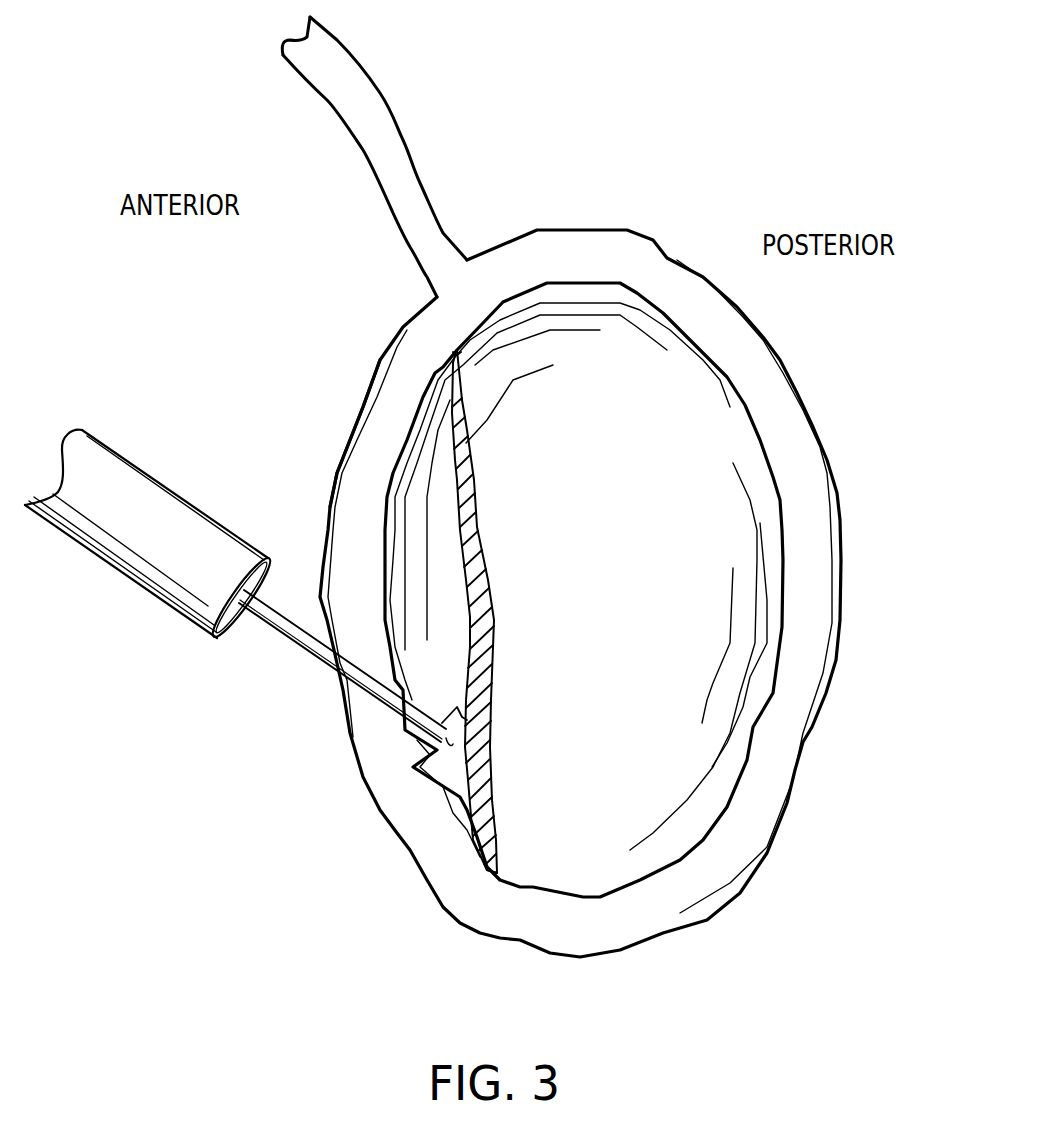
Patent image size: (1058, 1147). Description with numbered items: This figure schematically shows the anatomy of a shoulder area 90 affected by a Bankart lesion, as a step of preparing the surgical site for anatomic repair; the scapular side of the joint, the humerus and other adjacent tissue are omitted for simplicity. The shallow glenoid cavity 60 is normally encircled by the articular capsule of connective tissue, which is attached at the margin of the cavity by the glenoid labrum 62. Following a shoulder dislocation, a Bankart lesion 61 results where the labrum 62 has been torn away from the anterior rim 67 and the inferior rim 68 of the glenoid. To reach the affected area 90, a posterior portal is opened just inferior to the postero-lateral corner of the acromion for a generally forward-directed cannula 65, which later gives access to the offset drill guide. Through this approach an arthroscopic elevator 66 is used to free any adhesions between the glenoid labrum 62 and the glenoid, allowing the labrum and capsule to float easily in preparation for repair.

The glenoid cavity 60 is at (733, 521).
The Bankart lesion 61 is at (488, 667).
The glenoid labrum 62 is at (380, 455).
The forward-directed cannula 65 is at (137, 500).
The arthroscopic elevator 66 is at (300, 643).
The anterior rim 67 is at (458, 355).
The inferior rim 68 is at (487, 870).
The shoulder area 90 is at (324, 795).